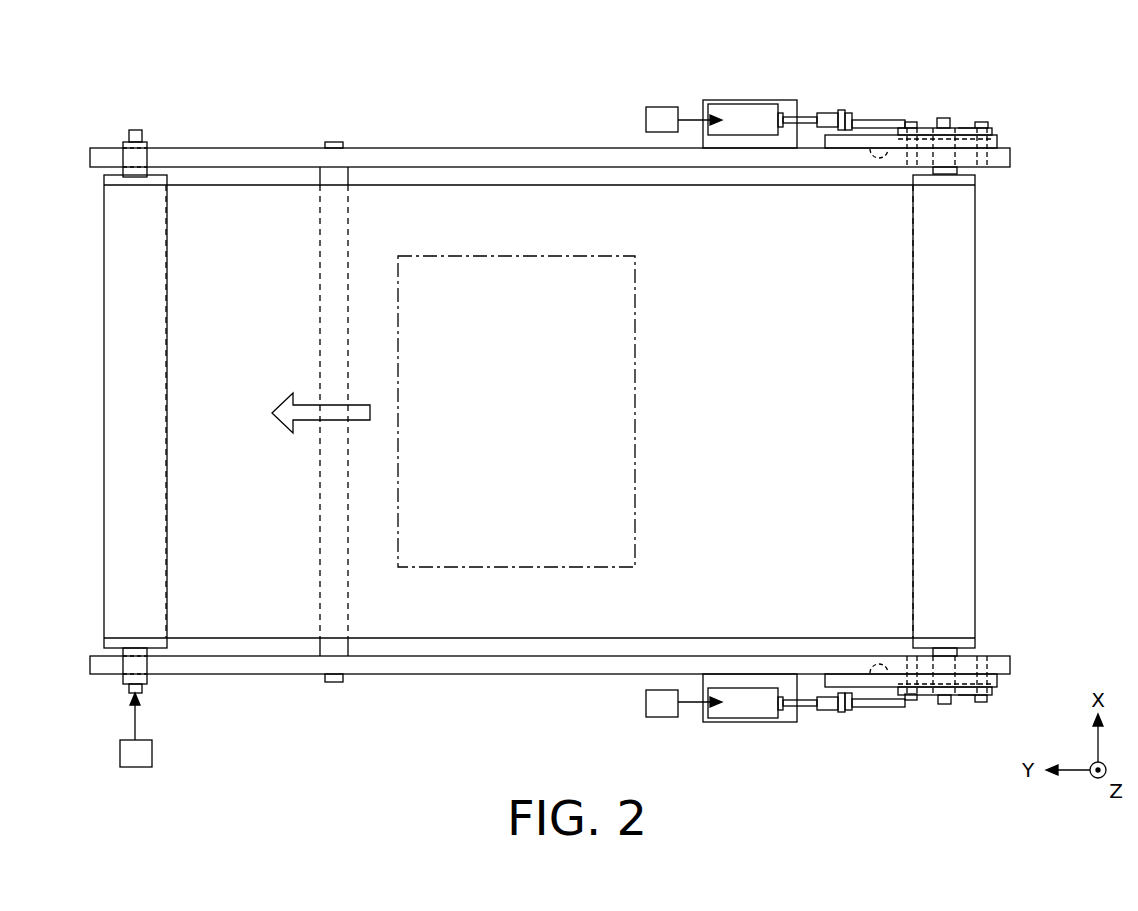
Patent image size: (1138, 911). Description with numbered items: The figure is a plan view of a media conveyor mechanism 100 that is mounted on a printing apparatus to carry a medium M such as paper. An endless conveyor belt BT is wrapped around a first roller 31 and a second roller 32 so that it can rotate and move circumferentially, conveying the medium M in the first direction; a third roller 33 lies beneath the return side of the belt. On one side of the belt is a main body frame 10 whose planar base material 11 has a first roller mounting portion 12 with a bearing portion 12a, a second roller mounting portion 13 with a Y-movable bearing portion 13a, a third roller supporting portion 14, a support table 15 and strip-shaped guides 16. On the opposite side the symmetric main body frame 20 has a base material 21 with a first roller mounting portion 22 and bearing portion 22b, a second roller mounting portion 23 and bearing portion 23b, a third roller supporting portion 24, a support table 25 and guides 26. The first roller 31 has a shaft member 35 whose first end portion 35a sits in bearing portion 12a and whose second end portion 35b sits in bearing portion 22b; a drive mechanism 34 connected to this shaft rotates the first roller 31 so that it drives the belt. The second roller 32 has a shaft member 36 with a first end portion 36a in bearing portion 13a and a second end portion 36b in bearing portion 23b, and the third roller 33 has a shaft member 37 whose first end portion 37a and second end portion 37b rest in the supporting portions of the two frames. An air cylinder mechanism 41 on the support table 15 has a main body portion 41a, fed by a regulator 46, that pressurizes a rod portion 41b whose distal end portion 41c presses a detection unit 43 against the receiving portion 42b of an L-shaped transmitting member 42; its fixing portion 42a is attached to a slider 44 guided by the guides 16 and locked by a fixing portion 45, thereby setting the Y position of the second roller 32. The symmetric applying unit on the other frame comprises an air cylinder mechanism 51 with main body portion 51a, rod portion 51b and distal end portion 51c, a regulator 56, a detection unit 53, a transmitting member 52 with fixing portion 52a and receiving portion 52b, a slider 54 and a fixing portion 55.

The media conveyor mechanism 100 is at (1048, 76).
The main body frame 10 is at (468, 685).
The base material 11 is at (533, 667).
The first roller mounting portion 12 is at (143, 667).
The bearing portion 12a is at (125, 668).
The second roller mounting portion 13 is at (882, 687).
The bearing portion 13a is at (948, 650).
The third roller supporting portion 14 is at (315, 670).
The support table 15 is at (787, 718).
The guides 16 is at (847, 680).
The main body frame 20 is at (413, 140).
The base material 21 is at (477, 157).
The first roller mounting portion 22 is at (147, 157).
The bearing portion 22b is at (123, 145).
The second roller mounting portion 23 is at (885, 137).
The bearing portion 23b is at (948, 170).
The third roller supporting portion 24 is at (327, 160).
The support table 25 is at (787, 103).
The guides 26 is at (848, 148).
The first roller 31 is at (110, 643).
The second roller 32 is at (972, 647).
The third roller 33 is at (350, 645).
The drive mechanism 34 is at (120, 757).
The shaft member 35 is at (159, 416).
The first end portion 35a is at (147, 690).
The second end portion 35b is at (135, 130).
The shaft member 36 is at (954, 412).
The first end portion 36a is at (947, 705).
The second end portion 36b is at (943, 118).
The shaft member 37 is at (332, 425).
The first end portion 37a is at (333, 684).
The second end portion 37b is at (333, 142).
The air cylinder mechanism 41 is at (815, 593).
The main body portion 41a is at (745, 697).
The rod portion 41b is at (806, 700).
The distal end portion 41c is at (828, 708).
The transmitting member 42 is at (832, 758).
The fixing portion 42a is at (897, 706).
The receiving portion 42b is at (848, 712).
The detection unit 43 is at (842, 712).
The slider 44 is at (965, 697).
The fixing portion 45 is at (983, 700).
The regulator 46 is at (660, 718).
The air cylinder mechanism 51 is at (815, 232).
The main body portion 51a is at (745, 127).
The rod portion 51b is at (805, 123).
The distal end portion 51c is at (827, 115).
The transmitting member 52 is at (832, 68).
The fixing portion 52a is at (897, 120).
The receiving portion 52b is at (848, 113).
The detection unit 53 is at (842, 110).
The slider 54 is at (967, 128).
The fixing portion 55 is at (988, 124).
The regulator 56 is at (662, 107).
The medium M is at (567, 253).
The conveyor belt BT is at (872, 410).